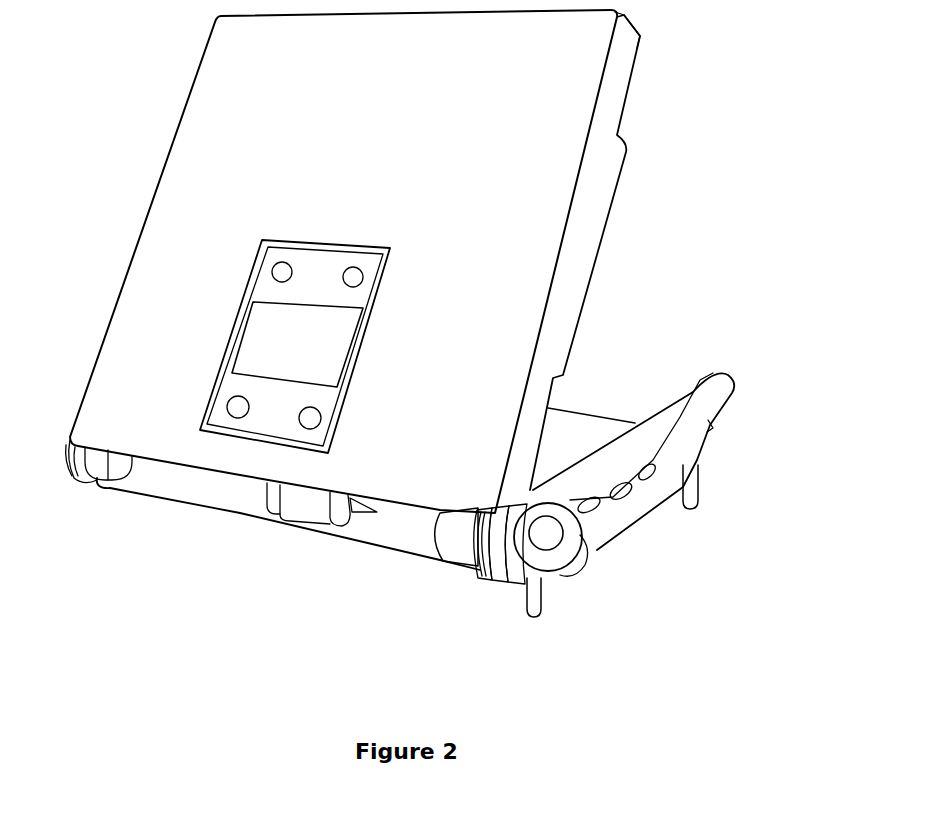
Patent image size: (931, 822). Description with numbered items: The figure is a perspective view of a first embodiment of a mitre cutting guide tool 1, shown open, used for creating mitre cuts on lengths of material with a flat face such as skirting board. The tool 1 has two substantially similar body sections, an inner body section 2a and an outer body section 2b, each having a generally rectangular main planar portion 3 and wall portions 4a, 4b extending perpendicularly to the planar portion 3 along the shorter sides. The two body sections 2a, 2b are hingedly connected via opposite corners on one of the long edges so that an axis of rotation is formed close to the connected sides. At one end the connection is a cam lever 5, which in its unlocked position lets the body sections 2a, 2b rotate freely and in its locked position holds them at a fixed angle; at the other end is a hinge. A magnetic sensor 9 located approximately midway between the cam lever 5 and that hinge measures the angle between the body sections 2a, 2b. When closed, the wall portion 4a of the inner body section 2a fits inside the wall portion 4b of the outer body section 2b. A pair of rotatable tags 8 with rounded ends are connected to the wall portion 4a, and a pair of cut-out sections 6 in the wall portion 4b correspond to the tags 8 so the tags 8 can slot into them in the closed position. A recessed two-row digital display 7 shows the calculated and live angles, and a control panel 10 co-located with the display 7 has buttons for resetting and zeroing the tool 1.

The mitre cutting guide tool 1 is at (376, 575).
The inner body section 2a is at (437, 485).
The outer body section 2b is at (400, 282).
The main planar portion 3 is at (180, 350).
The wall portion of inner body section 4a is at (713, 432).
The wall portion of outer body section 4b is at (620, 55).
The cam lever 5 is at (620, 520).
The cut-out sections 6 is at (636, 118).
The display 7 is at (303, 363).
The tags 8 is at (540, 596).
The sensor 9 is at (283, 503).
The control panel 10 is at (216, 364).